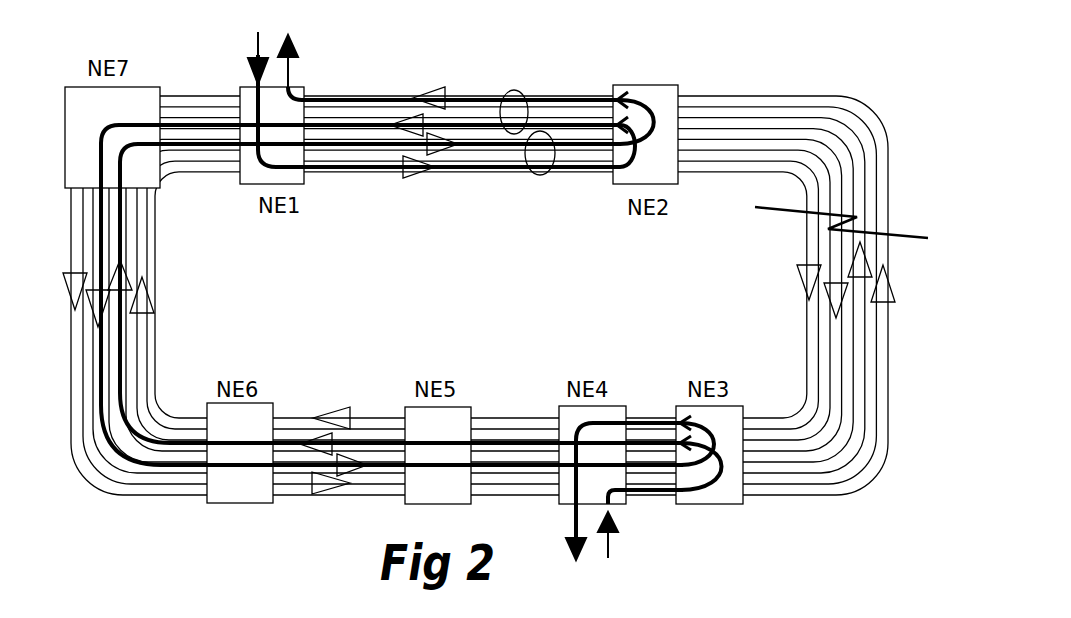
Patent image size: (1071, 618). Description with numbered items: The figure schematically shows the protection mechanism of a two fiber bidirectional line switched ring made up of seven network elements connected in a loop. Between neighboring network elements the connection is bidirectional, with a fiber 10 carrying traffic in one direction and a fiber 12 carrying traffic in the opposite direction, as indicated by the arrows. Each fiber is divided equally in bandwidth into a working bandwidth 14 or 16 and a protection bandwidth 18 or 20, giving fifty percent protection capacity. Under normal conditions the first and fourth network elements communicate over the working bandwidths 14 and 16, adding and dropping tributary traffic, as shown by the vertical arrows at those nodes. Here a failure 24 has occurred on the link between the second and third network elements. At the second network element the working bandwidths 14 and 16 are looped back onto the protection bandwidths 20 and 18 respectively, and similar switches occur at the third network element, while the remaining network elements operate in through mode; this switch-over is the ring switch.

The fiber 10 is at (512, 89).
The fiber 12 is at (545, 176).
The working bandwidth 14 is at (234, 100).
The working bandwidth 16 is at (172, 169).
The protection bandwidth 18 is at (202, 123).
The protection bandwidth 20 is at (193, 148).
The failure 24 is at (773, 212).